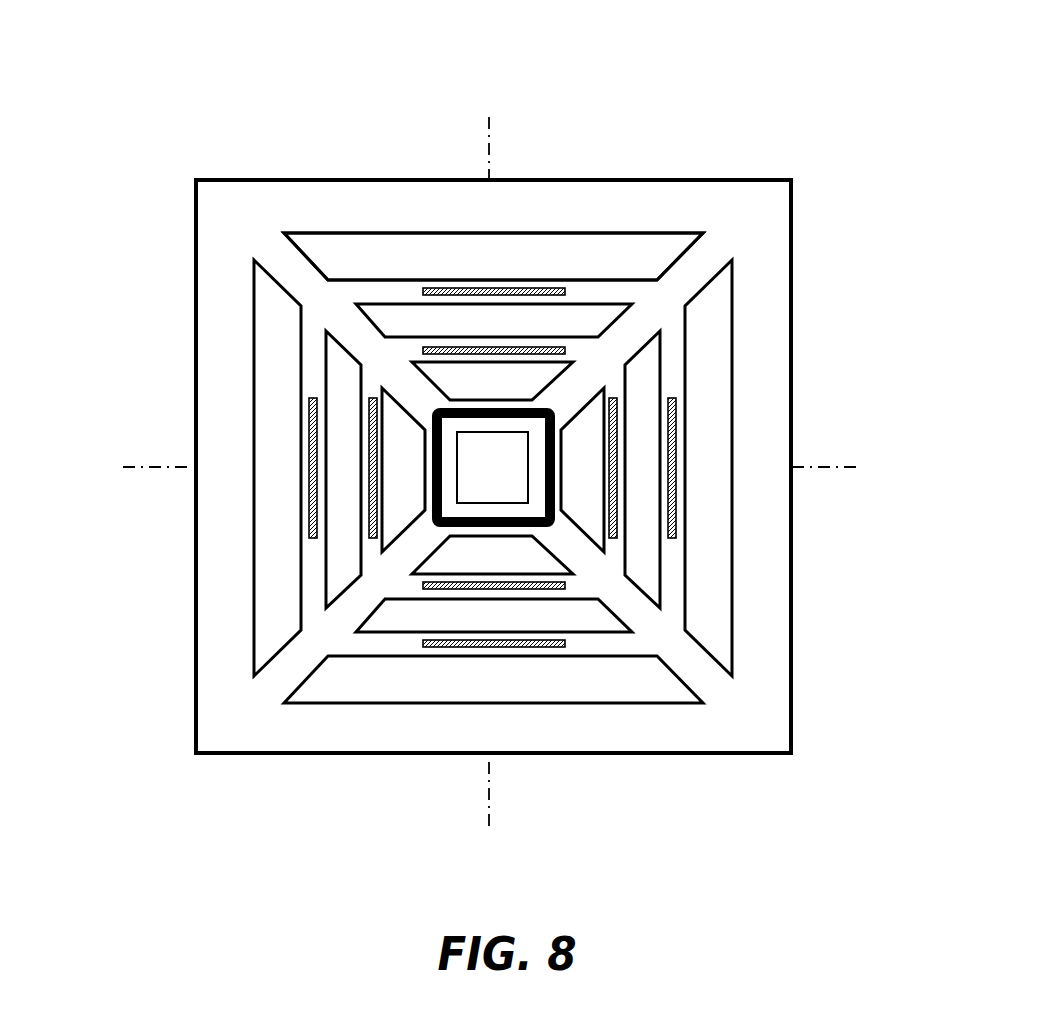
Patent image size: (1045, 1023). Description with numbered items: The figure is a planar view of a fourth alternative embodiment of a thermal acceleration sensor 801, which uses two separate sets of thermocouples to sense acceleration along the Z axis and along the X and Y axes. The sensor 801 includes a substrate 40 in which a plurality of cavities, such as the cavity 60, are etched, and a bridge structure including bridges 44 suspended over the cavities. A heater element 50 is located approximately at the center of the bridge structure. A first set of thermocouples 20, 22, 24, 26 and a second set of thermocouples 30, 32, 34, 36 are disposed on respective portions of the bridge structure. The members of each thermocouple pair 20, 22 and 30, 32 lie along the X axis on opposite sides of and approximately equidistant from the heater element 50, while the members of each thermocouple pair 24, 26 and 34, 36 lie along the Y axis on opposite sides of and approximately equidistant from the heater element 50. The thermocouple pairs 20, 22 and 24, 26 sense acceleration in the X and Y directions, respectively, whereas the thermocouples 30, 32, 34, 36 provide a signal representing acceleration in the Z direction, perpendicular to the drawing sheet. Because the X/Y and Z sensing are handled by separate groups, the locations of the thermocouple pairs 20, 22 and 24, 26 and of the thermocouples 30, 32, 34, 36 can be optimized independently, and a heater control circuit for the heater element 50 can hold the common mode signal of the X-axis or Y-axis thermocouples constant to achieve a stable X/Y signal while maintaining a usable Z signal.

The thermal acceleration sensor 801 is at (224, 80).
The substrate 40 is at (707, 182).
The bridges 44 is at (280, 268).
The cavity 60 is at (349, 253).
The thermocouple 30 is at (432, 289).
The thermocouple 20 is at (552, 349).
The thermocouple 22 is at (432, 592).
The thermocouple 32 is at (541, 648).
The thermocouple 24 is at (372, 398).
The thermocouple 34 is at (307, 513).
The thermocouple 26 is at (620, 392).
The thermocouple 36 is at (678, 528).
The heater element 50 is at (440, 463).